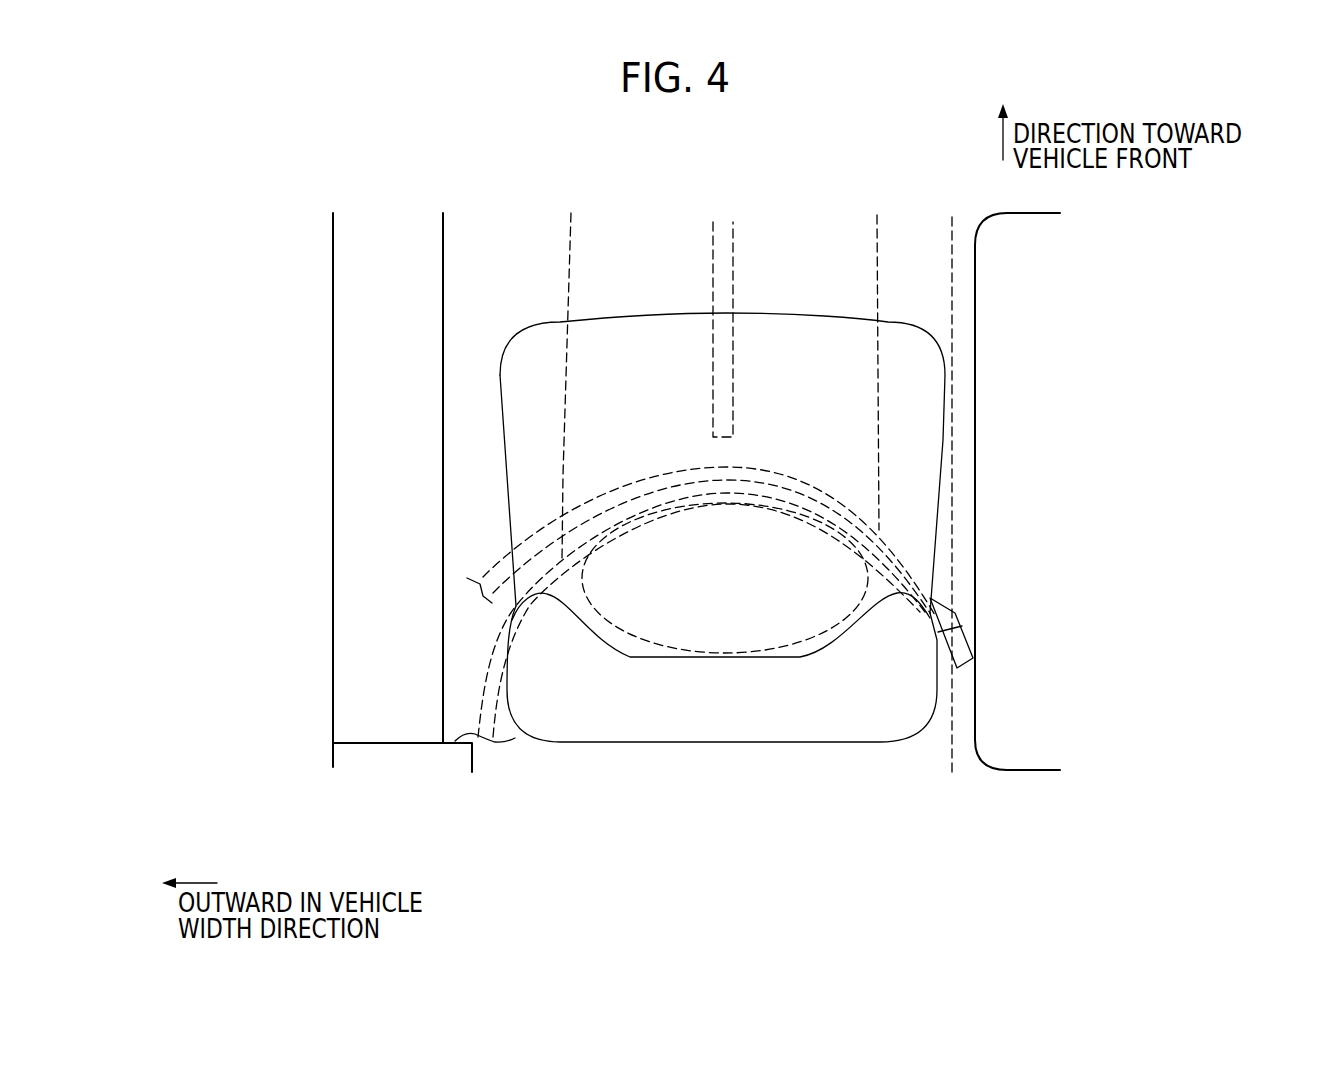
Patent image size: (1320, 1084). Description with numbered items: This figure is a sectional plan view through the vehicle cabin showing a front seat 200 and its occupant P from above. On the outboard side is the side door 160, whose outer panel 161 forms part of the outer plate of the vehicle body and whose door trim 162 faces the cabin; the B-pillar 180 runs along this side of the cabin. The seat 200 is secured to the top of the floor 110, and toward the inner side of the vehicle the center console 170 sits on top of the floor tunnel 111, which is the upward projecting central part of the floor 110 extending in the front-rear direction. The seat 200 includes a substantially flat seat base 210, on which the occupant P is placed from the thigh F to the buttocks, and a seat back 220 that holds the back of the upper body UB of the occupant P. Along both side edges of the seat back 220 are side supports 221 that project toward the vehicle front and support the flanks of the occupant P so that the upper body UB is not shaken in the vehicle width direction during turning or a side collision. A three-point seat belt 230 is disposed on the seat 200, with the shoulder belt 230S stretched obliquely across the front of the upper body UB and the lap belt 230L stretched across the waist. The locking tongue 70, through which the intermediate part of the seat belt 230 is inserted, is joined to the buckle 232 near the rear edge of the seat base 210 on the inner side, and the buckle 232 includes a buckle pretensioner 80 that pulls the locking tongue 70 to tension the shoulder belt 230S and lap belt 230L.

The floor 110 is at (521, 256).
The floor tunnel 111 is at (952, 253).
The side door 160 is at (322, 249).
The outer panel 161 is at (333, 497).
The door trim 162 is at (443, 522).
The center console 170 is at (1023, 267).
The B-pillar 180 is at (333, 765).
The seat 200 is at (477, 337).
The seat base 210 is at (503, 465).
The seat back 220 is at (740, 737).
The side supports 221 is at (539, 621).
The seat belt 230 is at (865, 471).
The lap belt 230L is at (860, 515).
The shoulder belt 230S is at (865, 539).
The locking tongue 70 is at (953, 618).
The buckle 232 is at (965, 640).
The buckle pretensioner 80 is at (951, 633).
The thigh F is at (563, 363).
The occupant P is at (621, 210).
The upper body UB is at (858, 580).